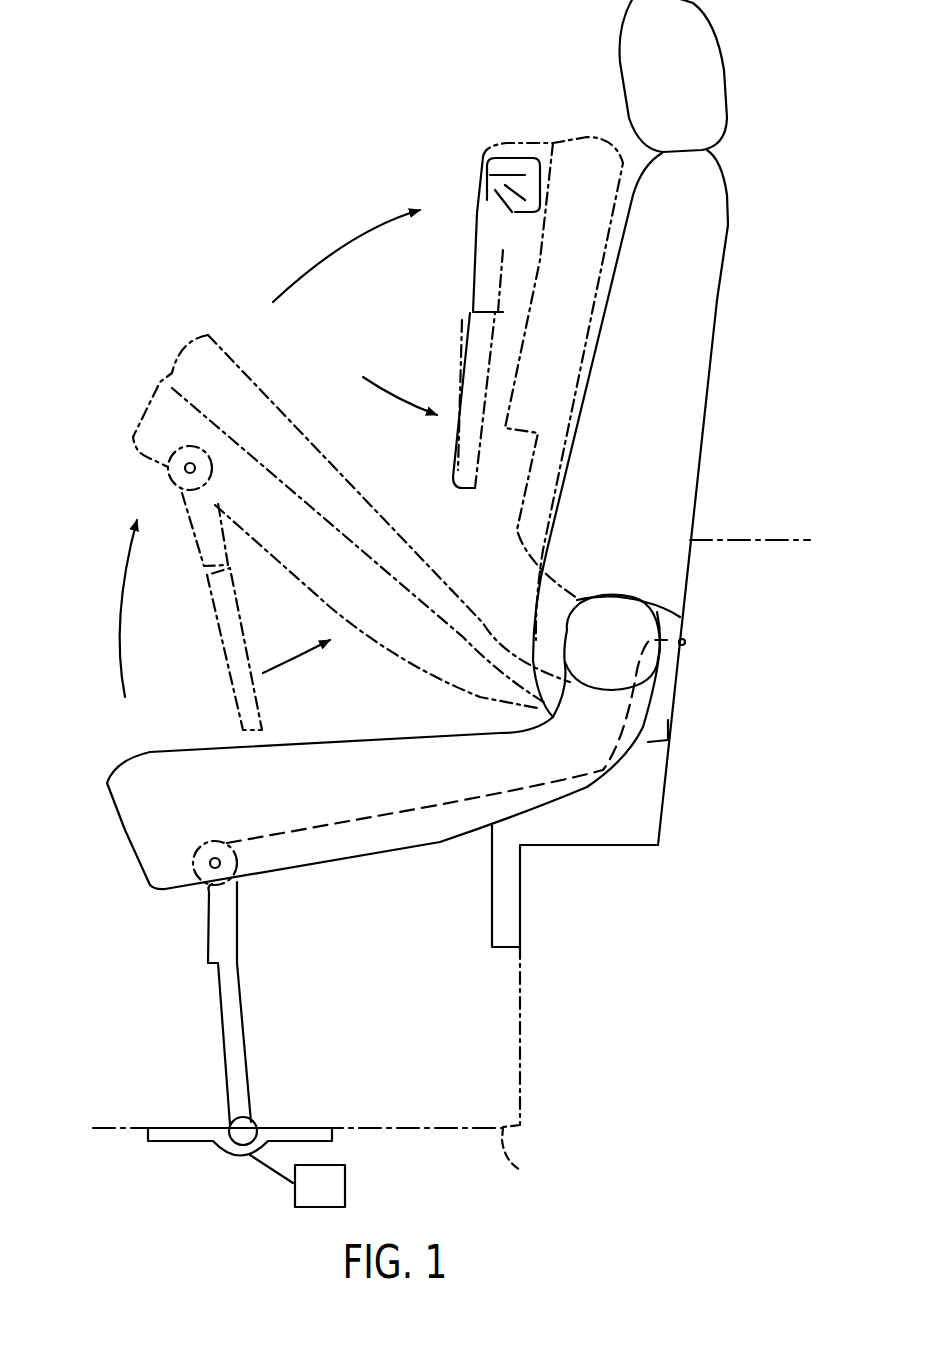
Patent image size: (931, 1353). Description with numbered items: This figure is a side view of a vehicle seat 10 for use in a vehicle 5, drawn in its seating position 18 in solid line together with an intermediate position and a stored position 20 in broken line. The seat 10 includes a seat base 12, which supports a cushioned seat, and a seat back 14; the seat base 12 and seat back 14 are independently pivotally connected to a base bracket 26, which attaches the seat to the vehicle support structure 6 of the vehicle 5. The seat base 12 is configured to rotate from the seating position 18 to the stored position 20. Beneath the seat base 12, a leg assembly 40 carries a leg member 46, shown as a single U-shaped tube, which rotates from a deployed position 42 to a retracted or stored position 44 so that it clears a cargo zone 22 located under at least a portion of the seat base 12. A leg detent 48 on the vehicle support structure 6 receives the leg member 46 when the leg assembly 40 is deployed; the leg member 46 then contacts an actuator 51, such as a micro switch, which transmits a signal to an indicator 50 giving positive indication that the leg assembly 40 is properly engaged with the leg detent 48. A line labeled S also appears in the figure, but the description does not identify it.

The vehicle 5 is at (580, 1130).
The vehicle support structure 6 is at (523, 1157).
The vehicle seat 10 is at (290, 178).
The seat base 12 is at (128, 850).
The seat back 14 is at (693, 383).
The seating position 18 is at (80, 778).
The stored position 20 is at (562, 110).
The cargo zone 22 is at (487, 1023).
The base bracket 26 is at (647, 823).
The leg assembly 40 is at (218, 1025).
The deployed position 42 is at (185, 990).
The retracted or stored position 44 is at (472, 338).
The leg member 46 is at (237, 1057).
The leg detent 48 is at (147, 1135).
The indicator 50 is at (347, 1185).
The actuator 51 is at (240, 1158).
The seat reference line S is at (723, 535).